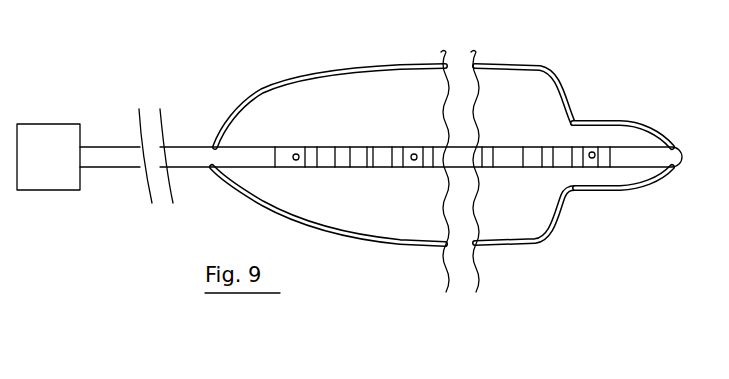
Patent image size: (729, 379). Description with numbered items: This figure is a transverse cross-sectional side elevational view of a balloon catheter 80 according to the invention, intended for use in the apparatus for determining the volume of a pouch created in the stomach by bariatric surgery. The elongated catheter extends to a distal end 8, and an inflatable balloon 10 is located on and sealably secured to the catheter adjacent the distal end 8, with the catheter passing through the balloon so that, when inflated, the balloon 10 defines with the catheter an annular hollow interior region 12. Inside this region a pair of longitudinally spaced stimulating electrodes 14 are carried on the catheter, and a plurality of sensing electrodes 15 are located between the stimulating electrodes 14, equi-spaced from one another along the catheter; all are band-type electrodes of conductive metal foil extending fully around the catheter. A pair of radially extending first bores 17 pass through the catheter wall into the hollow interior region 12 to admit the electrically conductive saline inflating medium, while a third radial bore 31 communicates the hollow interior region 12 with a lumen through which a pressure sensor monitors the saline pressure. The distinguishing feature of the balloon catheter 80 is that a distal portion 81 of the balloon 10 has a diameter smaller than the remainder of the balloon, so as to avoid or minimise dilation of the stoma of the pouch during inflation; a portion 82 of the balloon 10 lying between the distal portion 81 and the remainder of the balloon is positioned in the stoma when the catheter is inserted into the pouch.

The distal end 8 is at (680, 152).
The balloon 10 is at (469, 155).
The hollow interior region 12 is at (395, 220).
The stimulating electrodes 14 is at (277, 148).
The sensing electrodes 15 is at (372, 148).
The first bores 17 is at (295, 162).
The third radial bore 31 is at (412, 162).
The balloon catheter 80 is at (158, 238).
The distal portion 81 is at (643, 122).
The portion of the balloon 82 is at (572, 193).